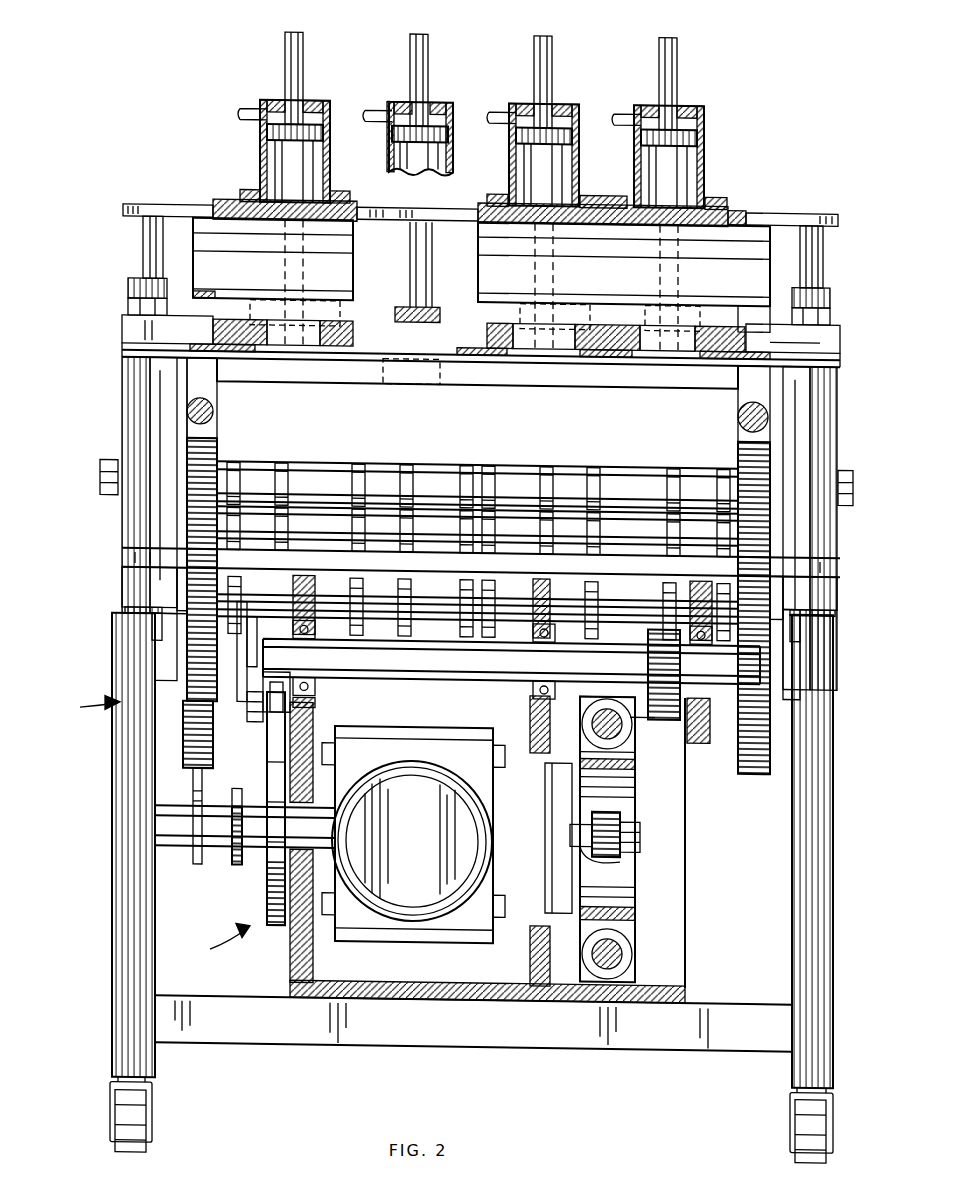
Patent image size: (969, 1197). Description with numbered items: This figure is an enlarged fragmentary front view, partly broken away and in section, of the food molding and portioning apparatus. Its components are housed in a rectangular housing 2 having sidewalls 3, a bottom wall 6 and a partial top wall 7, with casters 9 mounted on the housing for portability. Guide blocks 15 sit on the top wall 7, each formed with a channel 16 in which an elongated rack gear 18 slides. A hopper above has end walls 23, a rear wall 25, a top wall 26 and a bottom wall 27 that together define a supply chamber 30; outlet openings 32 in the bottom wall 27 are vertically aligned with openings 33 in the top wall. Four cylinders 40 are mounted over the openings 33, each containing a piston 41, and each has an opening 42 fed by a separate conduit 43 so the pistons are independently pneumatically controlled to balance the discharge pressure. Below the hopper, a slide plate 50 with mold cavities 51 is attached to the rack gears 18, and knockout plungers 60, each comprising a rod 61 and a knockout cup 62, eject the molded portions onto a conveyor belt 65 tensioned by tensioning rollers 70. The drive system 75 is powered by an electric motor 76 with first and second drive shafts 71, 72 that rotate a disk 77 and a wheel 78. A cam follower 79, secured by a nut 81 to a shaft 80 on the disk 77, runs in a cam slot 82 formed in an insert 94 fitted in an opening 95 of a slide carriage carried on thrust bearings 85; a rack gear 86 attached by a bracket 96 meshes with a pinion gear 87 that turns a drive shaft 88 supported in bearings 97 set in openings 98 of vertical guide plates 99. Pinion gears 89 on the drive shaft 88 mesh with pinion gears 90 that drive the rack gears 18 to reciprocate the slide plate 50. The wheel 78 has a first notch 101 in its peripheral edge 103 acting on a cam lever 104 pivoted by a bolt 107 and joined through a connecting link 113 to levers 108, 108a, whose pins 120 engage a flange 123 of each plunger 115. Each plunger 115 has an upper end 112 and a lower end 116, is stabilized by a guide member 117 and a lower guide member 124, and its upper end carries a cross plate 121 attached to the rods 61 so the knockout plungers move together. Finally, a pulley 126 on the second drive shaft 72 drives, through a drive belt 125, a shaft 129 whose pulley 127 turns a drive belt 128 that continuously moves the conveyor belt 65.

The housing 2 is at (91, 706).
The sidewall 3 is at (130, 847).
The bottom wall 6 is at (550, 1043).
The partial top wall 7 is at (135, 495).
The caster 9 is at (125, 1102).
The guide block 15 is at (140, 432).
The channel 16 is at (190, 380).
The rack gear 18 is at (188, 410).
The end wall 23 is at (190, 212).
The rear wall 25 is at (481, 275).
The top wall 26 is at (222, 200).
The bottom wall 27 is at (122, 347).
The supply chamber 30 is at (748, 204).
The outlet opening 32 is at (330, 320).
The opening 33 is at (322, 190).
The cylinder 40 is at (321, 86).
The piston 41 is at (300, 31).
The opening 42 is at (275, 98).
The conduit 43 is at (240, 108).
The slide plate 50 is at (140, 335).
The mold cavity 51 is at (285, 360).
The knockout plunger 60 is at (305, 262).
The rod 61 is at (283, 262).
The knockout cup 62 is at (345, 300).
The conveyor belt 65 is at (430, 505).
The tensioning roller 70 is at (300, 525).
The first drive shaft 71 is at (558, 790).
The second drive shaft 72 is at (338, 740).
The drive system 75 is at (218, 940).
The electric motor 76 is at (412, 841).
The disk 77 is at (620, 790).
The wheel 78 is at (275, 750).
The cam follower 79 is at (620, 810).
The shaft 80 is at (620, 855).
The nut 81 is at (640, 832).
The cam slot 82 is at (610, 772).
The thrust bearing 85 is at (533, 690).
The rack gear 86 is at (620, 707).
The pinion gear 87 is at (648, 632).
The drive shaft 88 is at (452, 675).
The pinion gear 89 is at (185, 588).
The pinion gear 90 is at (217, 445).
The insert 94 is at (620, 892).
The opening 95 is at (635, 908).
The bracket 96 is at (635, 740).
The bearing 97 is at (316, 628).
The opening 98 is at (316, 595).
The vertical guide plate 99 is at (315, 575).
The first notch 101 is at (315, 700).
The peripheral edge 103 is at (285, 925).
The cam lever 104 is at (265, 675).
The bolt 107 is at (255, 715).
The lever 108 is at (170, 680).
The lever 108a is at (795, 660).
The upper end 112 is at (148, 226).
The connecting link 113 is at (245, 615).
The plunger 115 is at (160, 250).
The lower end 116 is at (135, 583).
The guide member 117 is at (138, 278).
The pin 120 is at (152, 630).
The cross plate 121 is at (398, 208).
The flange 123 is at (125, 610).
The guide member 124 is at (125, 560).
The drive belt 125 is at (245, 862).
The pulley 126 is at (232, 795).
The pulley 127 is at (192, 793).
The drive belt 128 is at (192, 777).
The shaft 129 is at (170, 850).